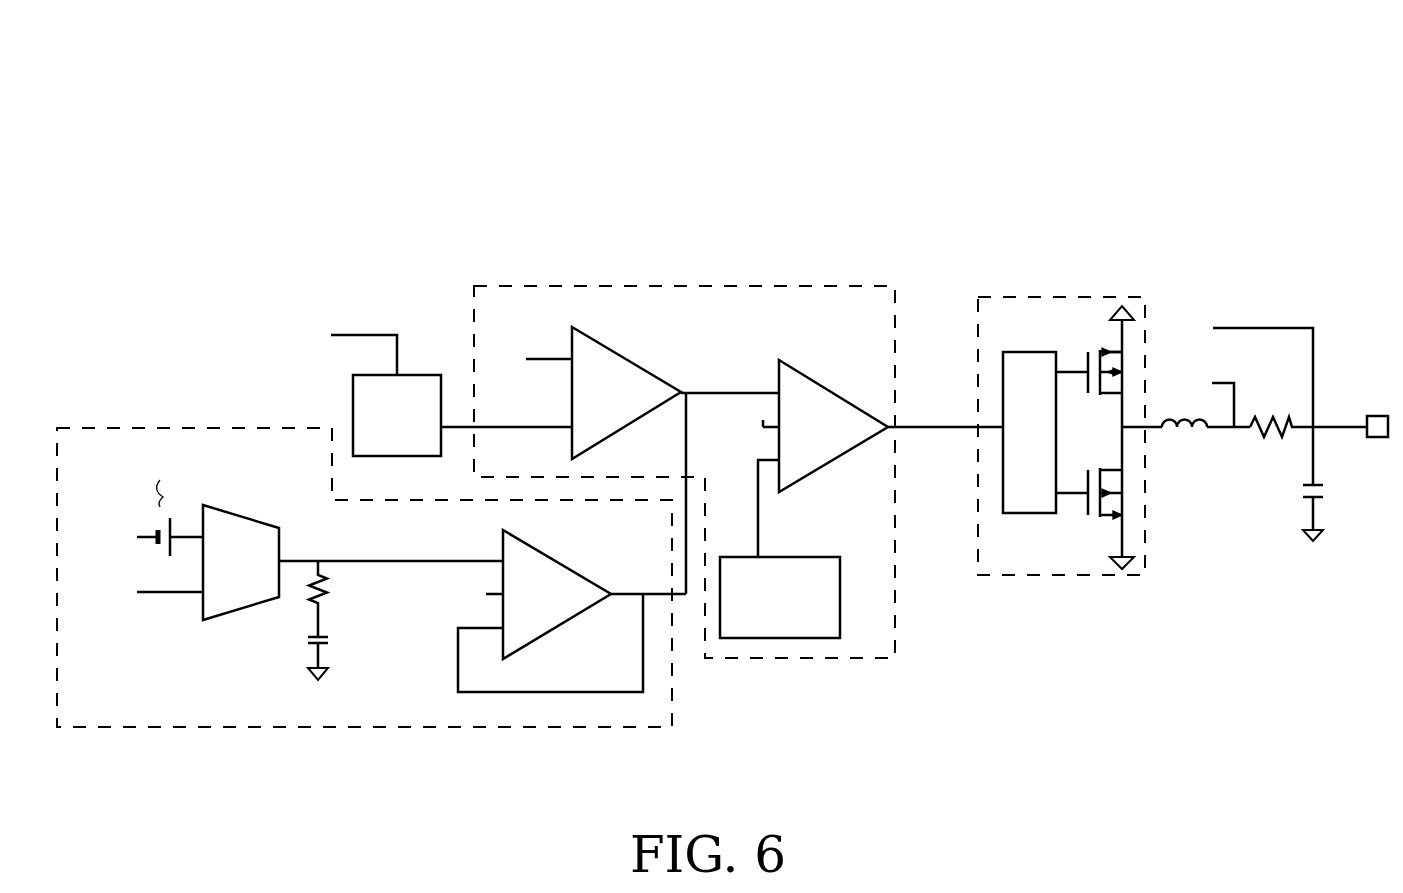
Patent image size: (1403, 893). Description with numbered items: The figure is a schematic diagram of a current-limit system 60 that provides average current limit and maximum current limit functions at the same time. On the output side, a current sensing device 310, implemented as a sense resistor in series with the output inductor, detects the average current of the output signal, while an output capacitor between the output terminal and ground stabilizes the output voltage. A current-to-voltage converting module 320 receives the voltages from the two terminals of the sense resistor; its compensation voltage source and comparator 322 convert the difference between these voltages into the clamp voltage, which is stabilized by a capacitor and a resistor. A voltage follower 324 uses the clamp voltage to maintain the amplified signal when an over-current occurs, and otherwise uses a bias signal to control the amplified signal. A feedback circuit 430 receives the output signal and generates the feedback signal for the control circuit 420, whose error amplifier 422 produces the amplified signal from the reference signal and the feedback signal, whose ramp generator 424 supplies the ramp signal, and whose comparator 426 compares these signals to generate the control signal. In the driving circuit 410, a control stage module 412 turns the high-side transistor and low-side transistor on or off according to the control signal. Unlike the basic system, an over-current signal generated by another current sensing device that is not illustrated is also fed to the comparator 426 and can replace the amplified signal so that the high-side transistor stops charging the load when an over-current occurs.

The current-limit system 60 is at (1128, 118).
The current-to-voltage converting module 320 is at (213, 428).
The comparator 322 is at (250, 506).
The voltage follower 324 is at (575, 565).
The feedback circuit 430 is at (446, 381).
The control circuit 420 is at (717, 286).
The error amplifier 422 is at (636, 361).
The ramp generator 424 is at (780, 549).
The comparator 426 is at (845, 395).
The driving circuit 410 is at (1061, 297).
The control stage module 412 is at (1068, 437).
The current sensing device 310 is at (1263, 442).